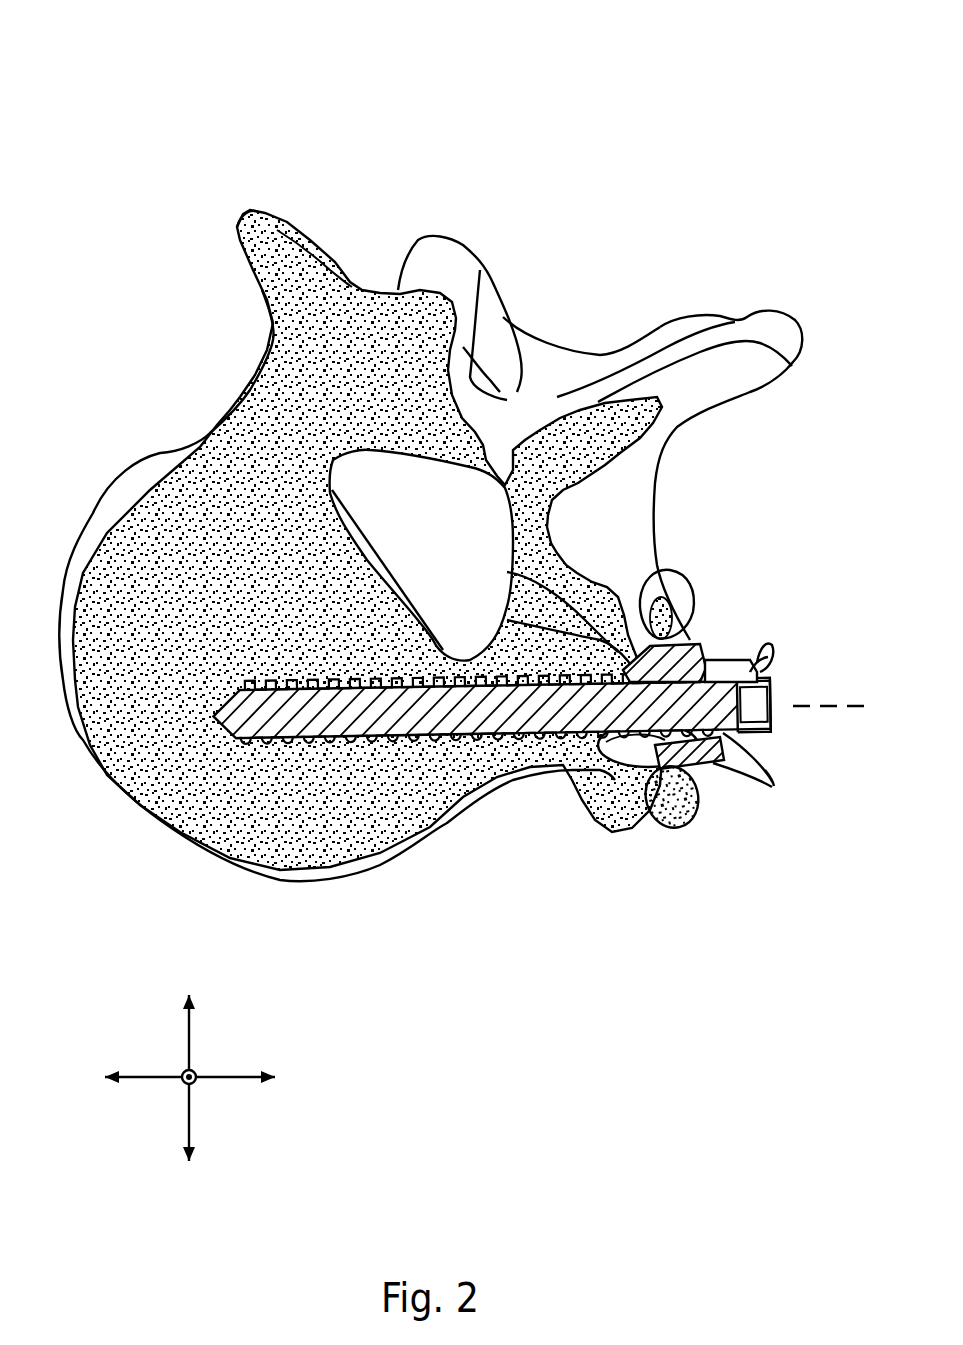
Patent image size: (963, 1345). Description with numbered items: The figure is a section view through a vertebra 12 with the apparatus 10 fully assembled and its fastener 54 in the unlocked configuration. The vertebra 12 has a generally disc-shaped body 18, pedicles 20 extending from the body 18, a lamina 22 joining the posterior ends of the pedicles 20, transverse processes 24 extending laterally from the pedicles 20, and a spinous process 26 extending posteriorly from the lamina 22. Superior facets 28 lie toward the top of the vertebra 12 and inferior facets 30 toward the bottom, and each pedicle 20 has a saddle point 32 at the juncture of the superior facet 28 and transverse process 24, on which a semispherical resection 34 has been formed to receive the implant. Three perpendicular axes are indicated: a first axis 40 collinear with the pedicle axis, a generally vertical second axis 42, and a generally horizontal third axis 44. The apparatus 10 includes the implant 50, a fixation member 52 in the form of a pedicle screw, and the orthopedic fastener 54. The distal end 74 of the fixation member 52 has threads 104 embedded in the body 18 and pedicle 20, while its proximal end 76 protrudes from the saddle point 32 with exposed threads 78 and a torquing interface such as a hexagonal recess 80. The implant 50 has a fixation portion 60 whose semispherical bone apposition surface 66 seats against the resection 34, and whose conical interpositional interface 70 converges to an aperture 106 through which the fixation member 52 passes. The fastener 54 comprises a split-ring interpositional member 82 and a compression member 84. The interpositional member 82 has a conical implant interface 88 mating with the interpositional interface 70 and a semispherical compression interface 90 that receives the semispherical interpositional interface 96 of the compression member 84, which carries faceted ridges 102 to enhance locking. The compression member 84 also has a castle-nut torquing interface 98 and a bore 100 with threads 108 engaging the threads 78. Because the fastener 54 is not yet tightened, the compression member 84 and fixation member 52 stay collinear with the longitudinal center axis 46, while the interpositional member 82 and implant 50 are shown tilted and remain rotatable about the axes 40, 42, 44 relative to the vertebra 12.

The apparatus 10 is at (545, 888).
The vertebra 12 is at (201, 88).
The body 18 is at (160, 530).
The pedicles 20 is at (203, 378).
The lamina 22 is at (505, 316).
The transverse processes 24 is at (238, 228).
The spinous process 26 is at (770, 345).
The superior facets 28 is at (480, 270).
The inferior facets 30 is at (398, 290).
The saddle point 32 is at (373, 292).
The semispherical resection 34 is at (628, 808).
The first axis 40 is at (223, 1077).
The second axis 42 is at (197, 1084).
The third axis 44 is at (187, 1033).
The longitudinal center axis 46 is at (860, 706).
The implant 50 is at (526, 820).
The fixation member 52 is at (431, 621).
The orthopedic fastener 54 is at (747, 806).
The fixation portion 60 is at (618, 630).
The bone apposition surface 66 is at (507, 572).
The interpositional interface 70 is at (507, 620).
The distal end 74 is at (293, 787).
The proximal end 76 is at (752, 668).
The threads 78 is at (757, 806).
The drive recess 80 is at (773, 698).
The interpositional member 82 is at (670, 605).
The compression member 84 is at (640, 812).
The implant interface 88 is at (697, 770).
The compression interface 90 is at (553, 752).
The interpositional interface 96 is at (737, 656).
The torquing interface 98 is at (748, 672).
The bore 100 is at (773, 708).
The ridges 102 is at (605, 735).
The threads 104 is at (357, 740).
The aperture 106 is at (640, 775).
The threads 108 is at (765, 672).